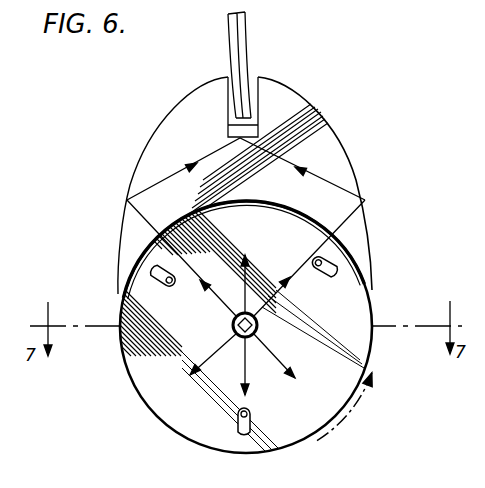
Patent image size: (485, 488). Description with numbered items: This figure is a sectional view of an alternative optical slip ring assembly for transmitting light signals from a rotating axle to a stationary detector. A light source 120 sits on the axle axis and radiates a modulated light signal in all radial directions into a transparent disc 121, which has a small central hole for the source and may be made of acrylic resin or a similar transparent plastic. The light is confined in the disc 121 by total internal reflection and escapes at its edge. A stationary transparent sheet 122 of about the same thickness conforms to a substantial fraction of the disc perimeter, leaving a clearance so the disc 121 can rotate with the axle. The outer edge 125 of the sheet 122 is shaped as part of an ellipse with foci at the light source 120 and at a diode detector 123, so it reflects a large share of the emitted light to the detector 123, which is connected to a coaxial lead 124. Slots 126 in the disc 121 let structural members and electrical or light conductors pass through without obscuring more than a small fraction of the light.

The light source 120 is at (256, 333).
The transparent disc 121 is at (173, 351).
The stationary transparent sheet 122 is at (147, 163).
The diode detector 123 is at (227, 141).
The coaxial lead 124 is at (254, 34).
The outer edge of the sheet 125 is at (335, 117).
The slots 126 is at (158, 290).